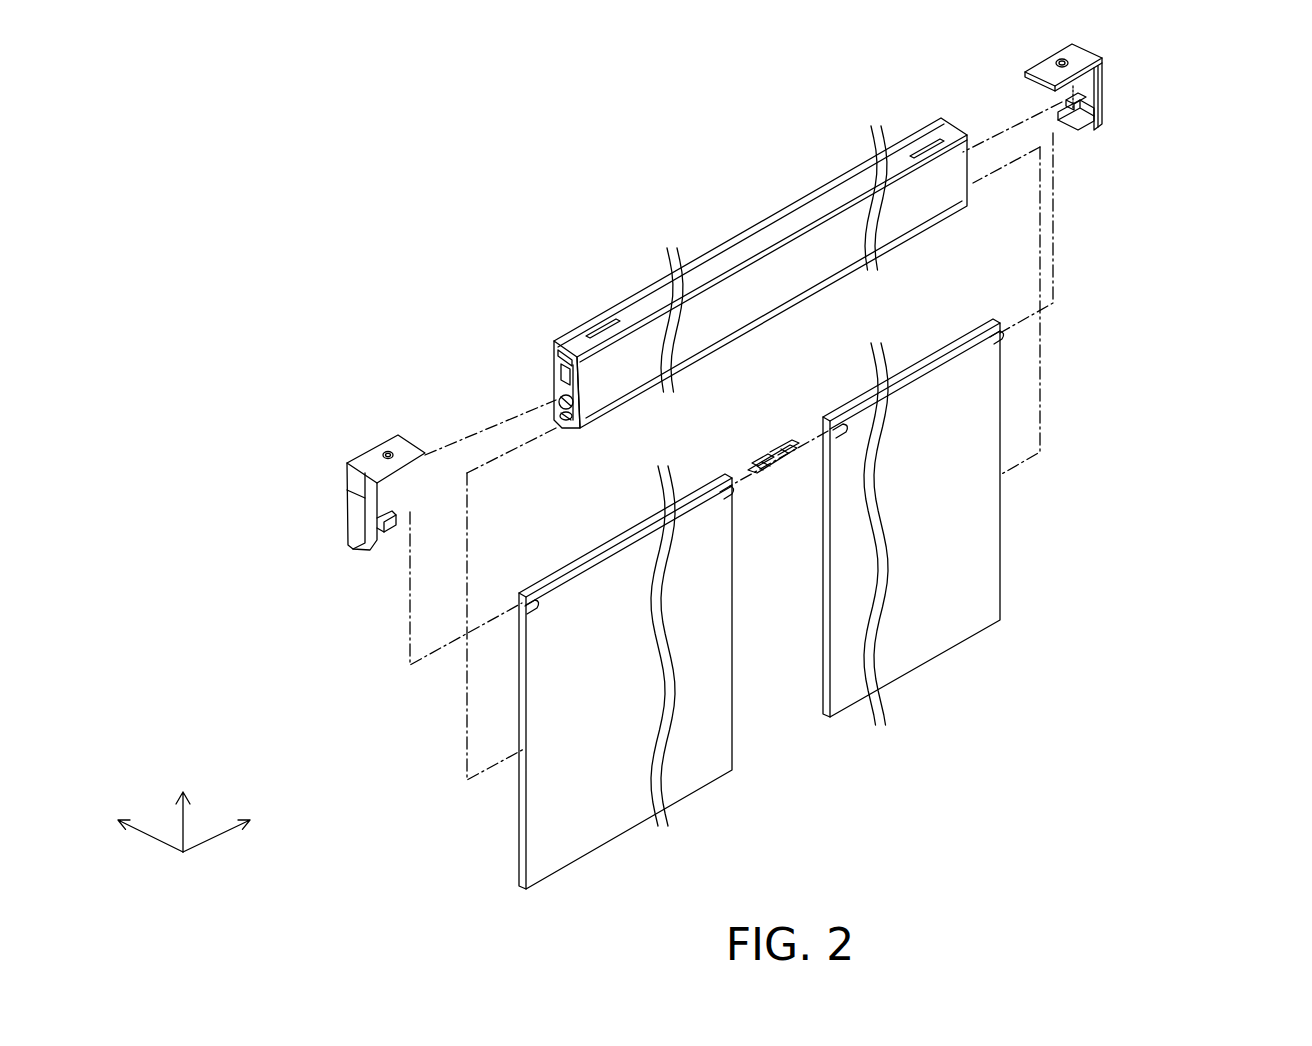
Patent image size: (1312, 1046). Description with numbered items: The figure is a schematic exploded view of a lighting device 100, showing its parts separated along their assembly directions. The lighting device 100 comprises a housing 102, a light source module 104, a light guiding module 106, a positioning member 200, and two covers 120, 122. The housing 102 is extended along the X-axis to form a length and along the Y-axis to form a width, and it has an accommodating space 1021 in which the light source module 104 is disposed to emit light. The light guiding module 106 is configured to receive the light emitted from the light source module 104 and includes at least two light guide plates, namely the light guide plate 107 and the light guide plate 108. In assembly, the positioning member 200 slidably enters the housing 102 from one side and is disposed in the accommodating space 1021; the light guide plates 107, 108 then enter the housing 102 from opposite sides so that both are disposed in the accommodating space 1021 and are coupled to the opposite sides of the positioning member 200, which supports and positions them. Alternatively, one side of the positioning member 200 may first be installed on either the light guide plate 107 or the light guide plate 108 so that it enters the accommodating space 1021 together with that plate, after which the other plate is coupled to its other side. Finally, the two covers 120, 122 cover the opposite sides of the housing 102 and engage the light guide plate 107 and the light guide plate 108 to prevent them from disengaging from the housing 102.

The lighting device 100 is at (497, 127).
The housing 102 is at (793, 226).
The accommodating space 1021 is at (562, 377).
The light source module 104 is at (560, 412).
The light guiding module 106 is at (1263, 438).
The light guide plate 107 is at (707, 770).
The light guide plate 108 is at (934, 614).
The cover 120 is at (350, 512).
The cover 122 is at (1106, 90).
The positioning member 200 is at (788, 455).